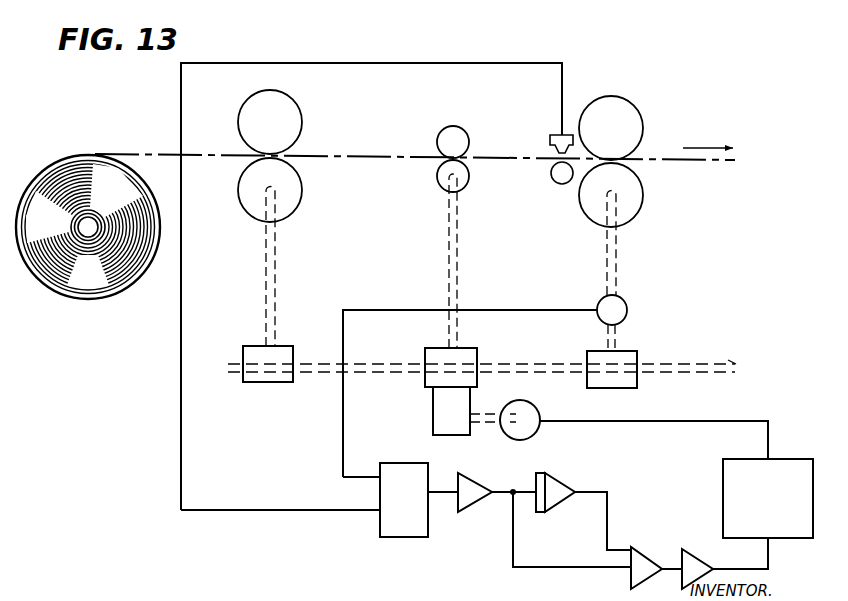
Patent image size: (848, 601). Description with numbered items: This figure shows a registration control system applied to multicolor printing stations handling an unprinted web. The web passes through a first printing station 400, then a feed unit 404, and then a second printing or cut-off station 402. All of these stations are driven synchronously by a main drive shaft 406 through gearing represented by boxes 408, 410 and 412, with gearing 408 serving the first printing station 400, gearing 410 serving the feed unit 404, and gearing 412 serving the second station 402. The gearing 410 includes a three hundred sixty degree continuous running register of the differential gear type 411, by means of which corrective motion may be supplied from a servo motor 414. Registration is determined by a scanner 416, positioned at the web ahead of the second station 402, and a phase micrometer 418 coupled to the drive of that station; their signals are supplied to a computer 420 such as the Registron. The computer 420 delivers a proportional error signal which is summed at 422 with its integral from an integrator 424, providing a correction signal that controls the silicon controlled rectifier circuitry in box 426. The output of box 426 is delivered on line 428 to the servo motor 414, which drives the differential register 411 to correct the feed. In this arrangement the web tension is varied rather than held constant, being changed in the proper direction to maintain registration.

The first printing station 400 is at (261, 98).
The second printing or cut-off station 402 is at (609, 99).
The feed unit 404 is at (447, 133).
The main drive shaft 406 is at (518, 367).
The gearing 408 is at (275, 382).
The gearing 410 is at (470, 348).
The continuous running register of the differential gear type 411 is at (433, 410).
The gearing 412 is at (619, 351).
The servo motor 414 is at (538, 410).
The scanner 416 is at (553, 136).
The phase micrometer 418 is at (627, 305).
The computer 420 is at (421, 453).
The summing point 422 is at (637, 550).
The integrator 424 is at (563, 497).
The silicon controlled rectifier circuitry 426 is at (778, 459).
The line 428 is at (644, 421).